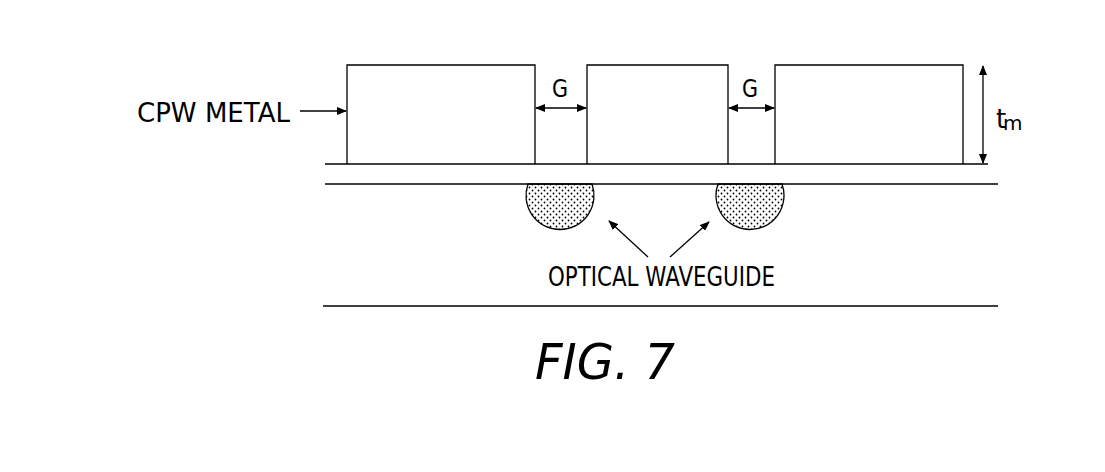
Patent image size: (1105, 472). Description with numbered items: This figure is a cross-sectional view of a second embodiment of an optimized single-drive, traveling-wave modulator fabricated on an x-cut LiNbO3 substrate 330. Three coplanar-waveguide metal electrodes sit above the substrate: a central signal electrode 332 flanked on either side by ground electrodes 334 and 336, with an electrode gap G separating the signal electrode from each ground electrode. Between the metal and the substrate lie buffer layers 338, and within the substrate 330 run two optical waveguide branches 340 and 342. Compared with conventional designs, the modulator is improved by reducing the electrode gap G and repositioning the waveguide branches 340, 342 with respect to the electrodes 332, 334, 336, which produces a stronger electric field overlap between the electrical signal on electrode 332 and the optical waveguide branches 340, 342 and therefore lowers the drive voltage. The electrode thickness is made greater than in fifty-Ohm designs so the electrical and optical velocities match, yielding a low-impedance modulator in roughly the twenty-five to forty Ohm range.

The x-cut LiNbO3 substrate 330 is at (1002, 184).
The signal electrode 332 is at (600, 65).
The ground electrode 334 is at (350, 65).
The ground electrode 336 is at (942, 65).
The buffer layers 338 is at (340, 175).
The waveguide branch 340 is at (537, 210).
The waveguide branch 342 is at (783, 199).